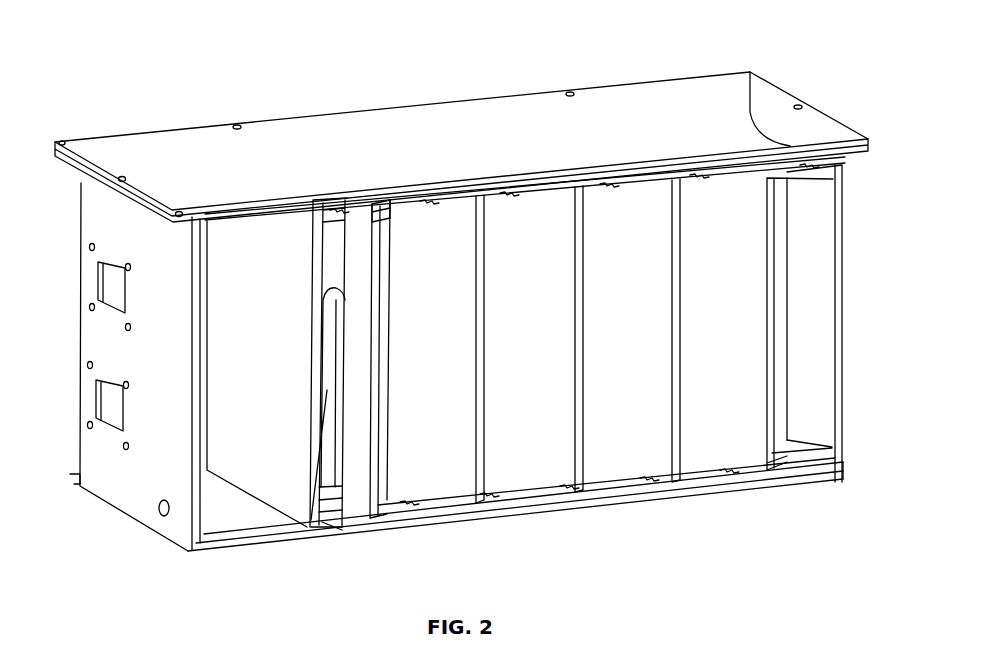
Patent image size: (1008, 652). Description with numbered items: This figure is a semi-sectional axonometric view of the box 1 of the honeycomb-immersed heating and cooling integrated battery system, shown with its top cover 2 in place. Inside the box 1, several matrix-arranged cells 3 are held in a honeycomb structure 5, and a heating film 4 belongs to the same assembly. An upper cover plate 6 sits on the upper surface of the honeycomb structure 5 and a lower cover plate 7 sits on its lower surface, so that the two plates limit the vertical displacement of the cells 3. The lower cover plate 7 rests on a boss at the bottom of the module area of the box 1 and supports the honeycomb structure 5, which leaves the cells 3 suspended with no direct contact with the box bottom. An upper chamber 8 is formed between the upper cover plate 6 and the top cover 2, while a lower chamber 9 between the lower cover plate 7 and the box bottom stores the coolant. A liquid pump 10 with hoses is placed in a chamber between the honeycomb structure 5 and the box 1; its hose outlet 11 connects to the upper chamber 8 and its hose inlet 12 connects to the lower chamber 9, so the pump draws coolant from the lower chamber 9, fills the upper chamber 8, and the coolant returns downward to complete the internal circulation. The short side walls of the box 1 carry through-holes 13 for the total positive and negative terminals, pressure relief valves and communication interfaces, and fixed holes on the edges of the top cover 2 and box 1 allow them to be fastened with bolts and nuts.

The box 1 is at (835, 481).
The top cover 2 is at (607, 127).
The cell 3 is at (444, 372).
The heating film 4 is at (583, 377).
The honeycomb structure 5 is at (388, 283).
The upper cover plate 6 is at (389, 200).
The lower cover plate 7 is at (767, 463).
The upper chamber 8 is at (749, 72).
The lower chamber 9 is at (592, 503).
The liquid pump 10 is at (336, 305).
The hose outlet 11 is at (352, 525).
The hose inlet 12 is at (347, 200).
The through-hole 13 is at (462, 186).